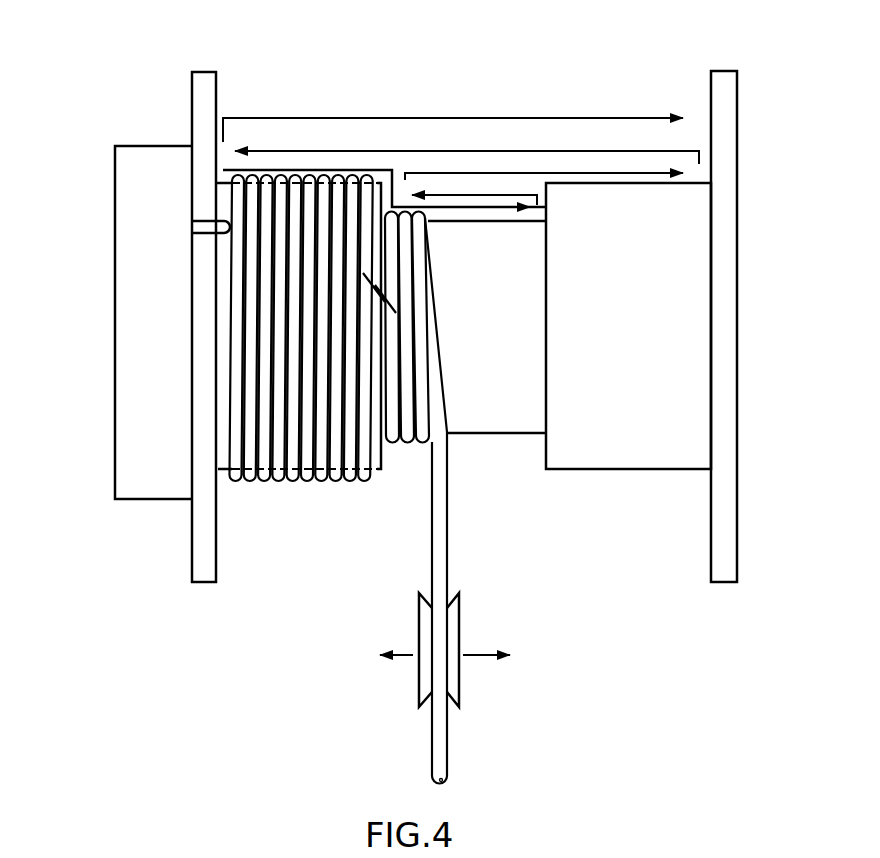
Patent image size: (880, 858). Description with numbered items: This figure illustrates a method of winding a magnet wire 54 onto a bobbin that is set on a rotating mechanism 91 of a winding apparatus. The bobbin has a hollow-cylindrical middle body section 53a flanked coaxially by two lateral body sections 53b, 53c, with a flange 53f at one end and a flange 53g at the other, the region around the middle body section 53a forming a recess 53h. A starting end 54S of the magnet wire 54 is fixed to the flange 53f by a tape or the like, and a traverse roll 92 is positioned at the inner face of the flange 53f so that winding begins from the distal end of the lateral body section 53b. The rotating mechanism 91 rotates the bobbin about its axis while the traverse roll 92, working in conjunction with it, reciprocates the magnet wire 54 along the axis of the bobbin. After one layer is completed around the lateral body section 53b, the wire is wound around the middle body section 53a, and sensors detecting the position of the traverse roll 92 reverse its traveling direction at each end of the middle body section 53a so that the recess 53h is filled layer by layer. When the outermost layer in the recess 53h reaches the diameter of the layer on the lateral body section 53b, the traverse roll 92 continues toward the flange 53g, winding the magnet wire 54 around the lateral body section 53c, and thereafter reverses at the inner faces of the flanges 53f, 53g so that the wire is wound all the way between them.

The flange 53f is at (217, 71).
The flange 53g is at (733, 110).
The rotating mechanism 91 is at (145, 500).
The lateral body section 53c is at (628, 470).
The middle body section 53a is at (515, 433).
The recess 53h is at (393, 453).
The lateral body section 53b is at (310, 487).
The magnet wire 54 is at (437, 323).
The starting end 54S is at (193, 237).
The traverse roll 92 is at (418, 677).